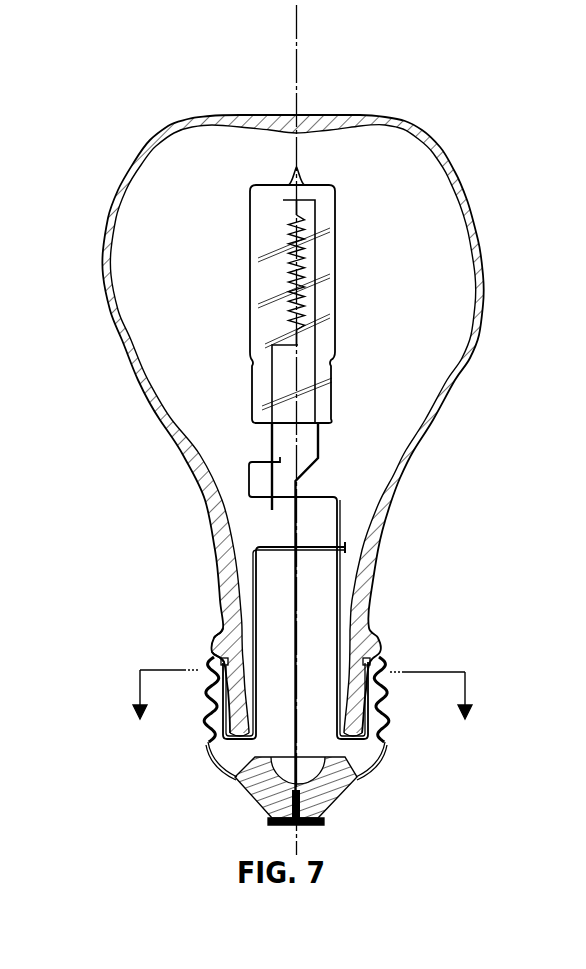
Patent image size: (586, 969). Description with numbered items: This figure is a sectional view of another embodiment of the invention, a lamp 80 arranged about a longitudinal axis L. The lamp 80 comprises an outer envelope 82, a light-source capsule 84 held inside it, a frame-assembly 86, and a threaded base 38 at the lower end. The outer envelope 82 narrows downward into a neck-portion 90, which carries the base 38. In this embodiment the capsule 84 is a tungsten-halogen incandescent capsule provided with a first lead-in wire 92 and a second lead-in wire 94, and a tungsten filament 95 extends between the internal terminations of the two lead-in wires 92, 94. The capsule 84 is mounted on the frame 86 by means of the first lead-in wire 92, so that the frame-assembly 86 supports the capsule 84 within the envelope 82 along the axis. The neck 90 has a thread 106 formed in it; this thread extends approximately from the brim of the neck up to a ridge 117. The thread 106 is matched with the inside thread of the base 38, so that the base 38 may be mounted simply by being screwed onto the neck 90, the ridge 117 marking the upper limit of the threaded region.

The lamp 80 is at (276, 430).
The outer envelope 82 is at (188, 122).
The light-source capsule 84 is at (250, 238).
The tungsten filament 95 is at (265, 215).
The first lead-in wire 92 is at (268, 432).
The second lead-in wire 94 is at (319, 437).
The frame-assembly 86 is at (339, 489).
The neck-portion 90 is at (297, 729).
The ridge 117 is at (372, 648).
The thread 106 is at (385, 676).
The threaded base 38 is at (254, 807).